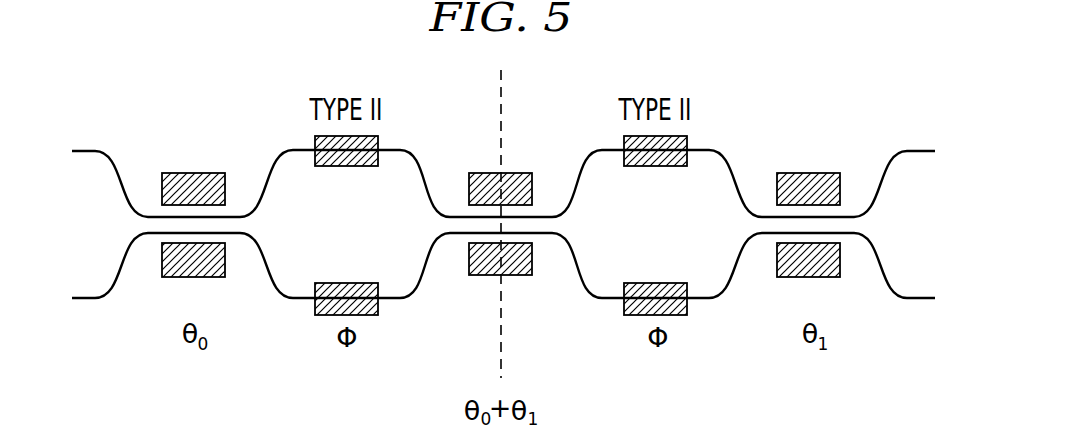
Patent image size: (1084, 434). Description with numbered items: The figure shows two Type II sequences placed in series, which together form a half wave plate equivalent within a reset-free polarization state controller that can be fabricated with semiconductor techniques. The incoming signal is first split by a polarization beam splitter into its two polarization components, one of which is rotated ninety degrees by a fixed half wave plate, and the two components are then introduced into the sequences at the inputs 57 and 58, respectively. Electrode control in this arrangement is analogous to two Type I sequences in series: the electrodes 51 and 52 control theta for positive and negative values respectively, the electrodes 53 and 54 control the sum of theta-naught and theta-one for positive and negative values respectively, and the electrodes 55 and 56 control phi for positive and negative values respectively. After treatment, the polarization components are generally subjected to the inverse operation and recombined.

The electrode 51 is at (180, 173).
The electrode 52 is at (203, 277).
The electrode 53 is at (520, 173).
The electrode 54 is at (487, 275).
The electrode 55 is at (355, 166).
The electrode 56 is at (332, 315).
The input 57 is at (72, 151).
The input 58 is at (72, 298).